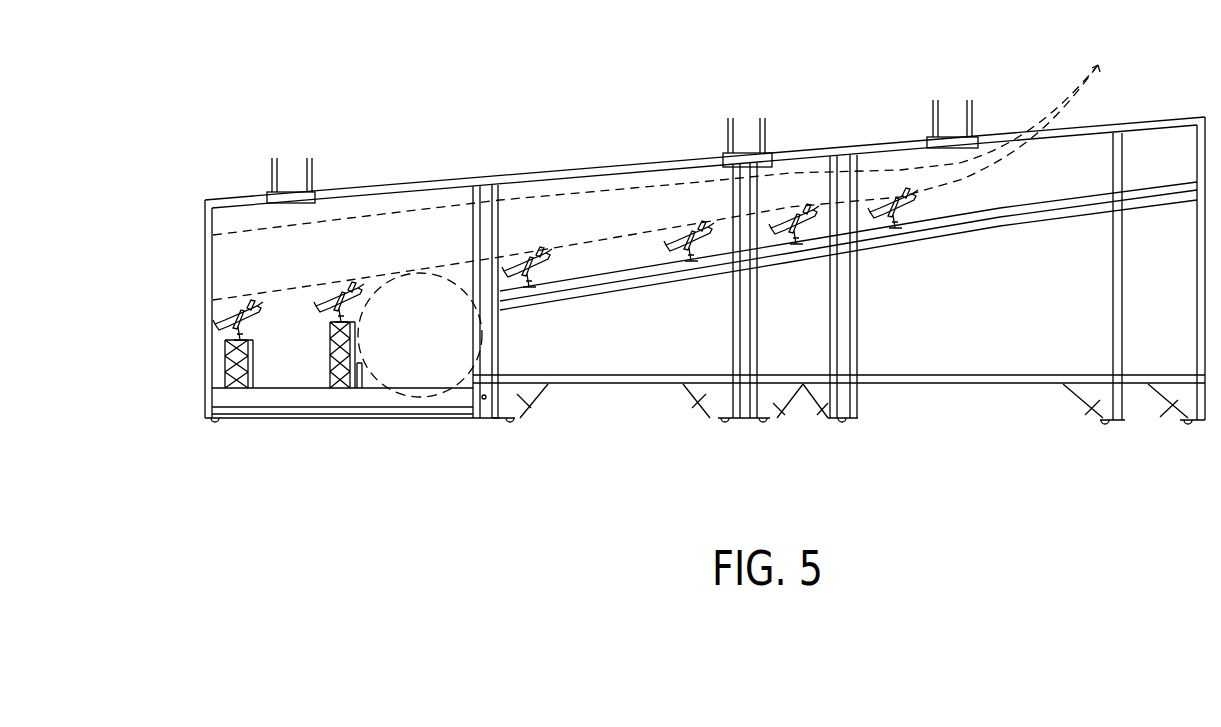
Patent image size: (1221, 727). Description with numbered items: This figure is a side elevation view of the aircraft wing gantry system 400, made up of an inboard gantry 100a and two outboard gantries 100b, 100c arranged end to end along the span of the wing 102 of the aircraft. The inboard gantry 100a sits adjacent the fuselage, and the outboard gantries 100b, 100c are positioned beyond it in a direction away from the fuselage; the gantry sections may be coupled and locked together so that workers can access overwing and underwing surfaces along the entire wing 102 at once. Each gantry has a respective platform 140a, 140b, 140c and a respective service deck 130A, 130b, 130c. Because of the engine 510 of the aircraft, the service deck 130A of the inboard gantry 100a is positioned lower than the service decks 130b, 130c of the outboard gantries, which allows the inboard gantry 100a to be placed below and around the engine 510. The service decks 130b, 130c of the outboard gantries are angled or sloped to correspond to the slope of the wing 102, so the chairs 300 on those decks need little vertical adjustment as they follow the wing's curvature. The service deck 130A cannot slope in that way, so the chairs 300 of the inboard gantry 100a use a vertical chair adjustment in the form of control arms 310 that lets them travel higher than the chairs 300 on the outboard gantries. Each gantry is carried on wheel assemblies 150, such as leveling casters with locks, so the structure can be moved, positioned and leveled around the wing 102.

The aircraft wing gantry system 400 is at (512, 93).
The inboard gantry 100a is at (433, 187).
The outboard gantry 100b is at (598, 172).
The outboard gantry 100c is at (1147, 123).
The wing 102 is at (1070, 102).
The service deck 130A is at (268, 395).
The service deck 130b is at (590, 280).
The service deck 130c is at (978, 215).
The platform 140a is at (290, 193).
The platform 140b is at (745, 153).
The platform 140c is at (950, 138).
The wheel assembly 150 is at (707, 397).
The chair 300 is at (233, 320).
The control arm 310 is at (233, 375).
The engine 510 is at (440, 350).